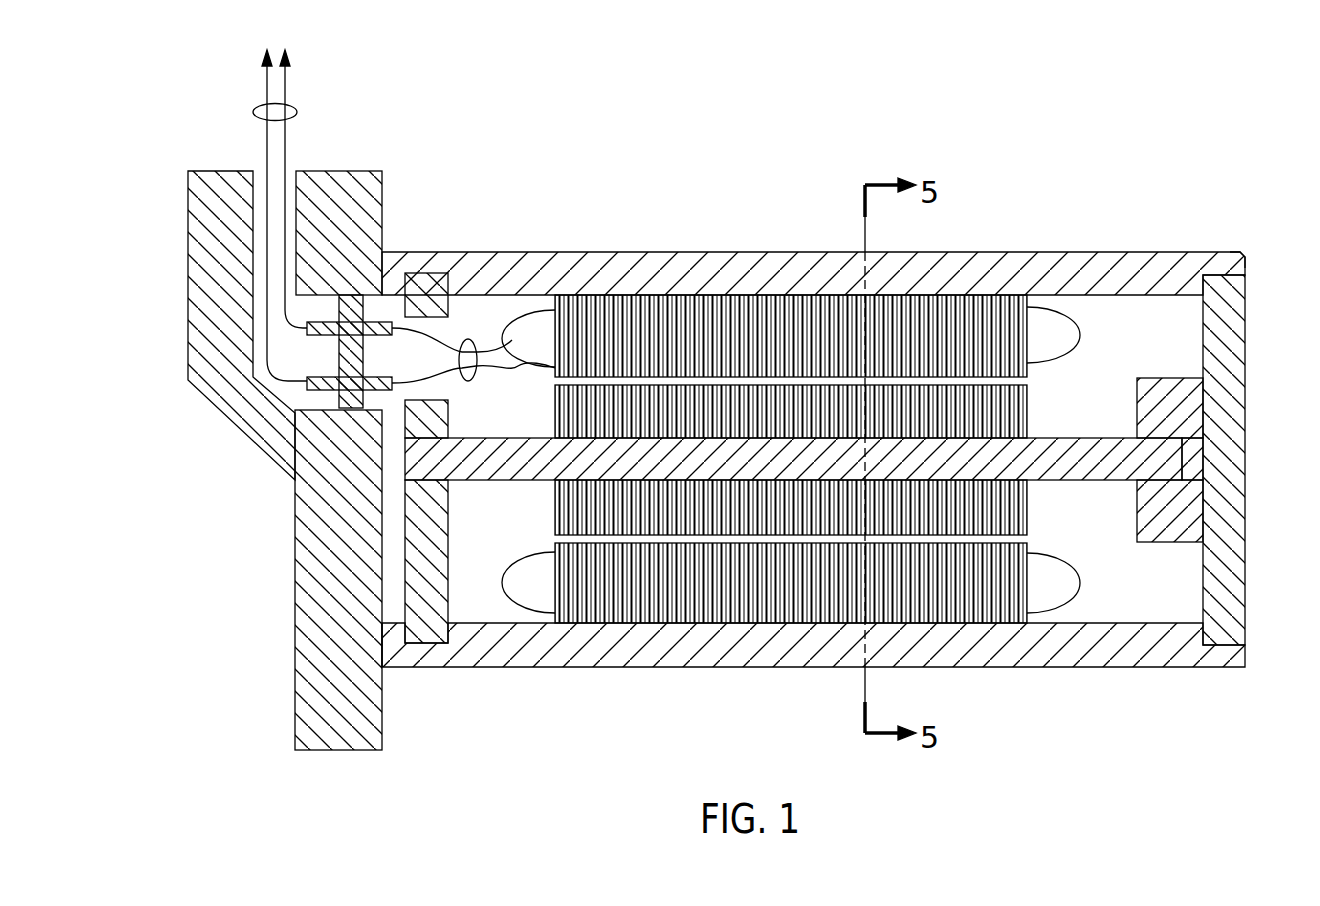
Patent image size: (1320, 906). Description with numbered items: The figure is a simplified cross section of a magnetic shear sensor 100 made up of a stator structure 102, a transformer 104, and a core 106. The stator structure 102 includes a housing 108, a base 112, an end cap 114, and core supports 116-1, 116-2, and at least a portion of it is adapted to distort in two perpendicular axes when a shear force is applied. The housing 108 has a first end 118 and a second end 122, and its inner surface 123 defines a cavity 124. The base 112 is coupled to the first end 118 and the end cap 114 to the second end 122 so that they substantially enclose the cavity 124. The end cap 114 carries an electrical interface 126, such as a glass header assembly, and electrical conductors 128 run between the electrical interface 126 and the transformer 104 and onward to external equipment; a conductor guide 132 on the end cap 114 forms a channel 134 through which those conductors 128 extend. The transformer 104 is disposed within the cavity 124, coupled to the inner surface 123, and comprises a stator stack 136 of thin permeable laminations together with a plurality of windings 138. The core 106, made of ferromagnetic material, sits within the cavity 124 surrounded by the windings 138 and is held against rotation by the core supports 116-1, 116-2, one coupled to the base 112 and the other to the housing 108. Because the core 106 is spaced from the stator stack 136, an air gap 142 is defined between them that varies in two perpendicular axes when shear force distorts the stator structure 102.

The magnetic shear sensor 100 is at (1143, 76).
The stator structure 102 is at (813, 418).
The transformer 104 is at (1080, 327).
The core 106 is at (1100, 440).
The housing 108 is at (995, 258).
The base 112 is at (1240, 361).
The end cap 114 is at (295, 630).
The core support 116-1 is at (1168, 543).
The core support 116-2 is at (448, 529).
The housing first end 118 is at (1248, 266).
The housing second end 122 is at (392, 648).
The inner surface 123 is at (466, 300).
The cavity 124 is at (1084, 518).
The electrical interface 126 is at (363, 361).
The electrical conductors 128 is at (292, 109).
The conductor guide 132 is at (188, 278).
The channel 134 is at (288, 178).
The stator stack 136 is at (750, 315).
The windings 138 is at (540, 315).
The air gap 142 is at (1028, 381).